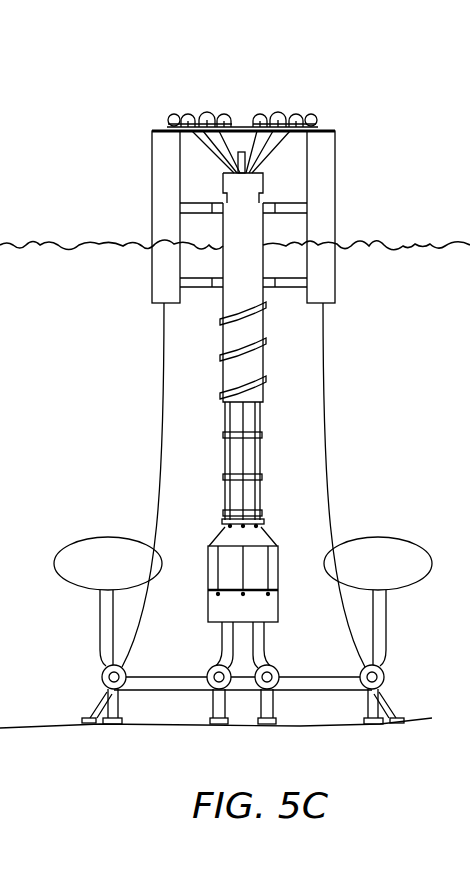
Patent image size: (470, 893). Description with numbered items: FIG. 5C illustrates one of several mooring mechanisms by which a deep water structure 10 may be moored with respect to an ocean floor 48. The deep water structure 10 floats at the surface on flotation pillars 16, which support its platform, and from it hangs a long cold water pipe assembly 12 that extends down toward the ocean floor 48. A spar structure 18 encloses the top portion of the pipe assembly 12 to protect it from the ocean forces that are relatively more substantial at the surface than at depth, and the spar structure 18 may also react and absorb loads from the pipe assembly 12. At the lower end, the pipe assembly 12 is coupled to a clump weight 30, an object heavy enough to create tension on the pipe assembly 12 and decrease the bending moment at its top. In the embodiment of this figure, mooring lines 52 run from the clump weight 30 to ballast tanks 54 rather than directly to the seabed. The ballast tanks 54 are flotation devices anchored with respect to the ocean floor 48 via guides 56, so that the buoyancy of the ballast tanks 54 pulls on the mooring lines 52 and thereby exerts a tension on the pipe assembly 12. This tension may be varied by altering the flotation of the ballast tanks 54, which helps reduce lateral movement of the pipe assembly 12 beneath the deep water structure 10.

The deep water structure 10 is at (322, 96).
The cold water pipe assembly 12 is at (262, 424).
The flotation pillars 16 is at (157, 272).
The spar structure 18 is at (264, 342).
The clump weight 30 is at (253, 618).
The ocean floor 48 is at (412, 707).
The mooring lines 52 is at (223, 641).
The ballast tanks 54 is at (95, 548).
The guides 56 is at (213, 688).